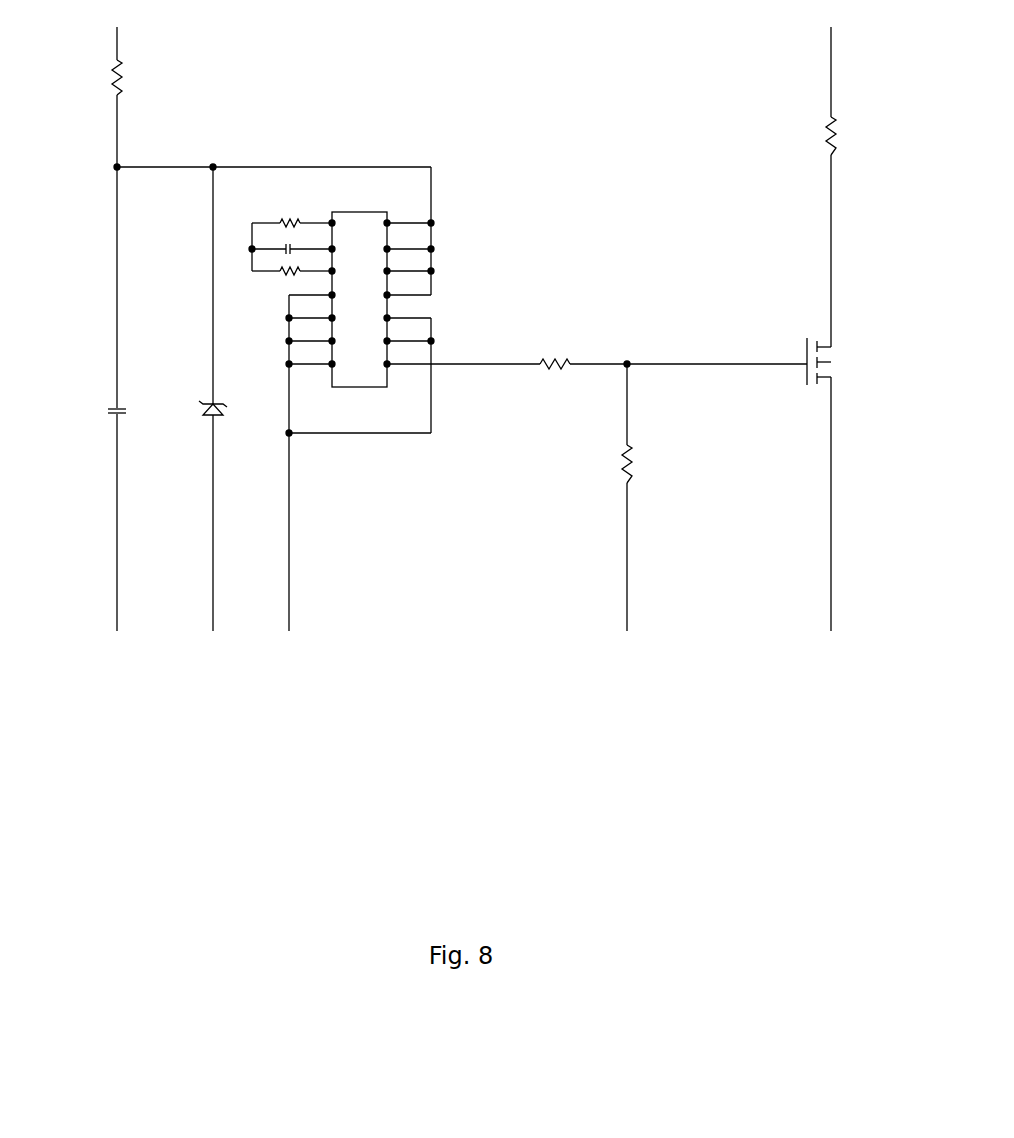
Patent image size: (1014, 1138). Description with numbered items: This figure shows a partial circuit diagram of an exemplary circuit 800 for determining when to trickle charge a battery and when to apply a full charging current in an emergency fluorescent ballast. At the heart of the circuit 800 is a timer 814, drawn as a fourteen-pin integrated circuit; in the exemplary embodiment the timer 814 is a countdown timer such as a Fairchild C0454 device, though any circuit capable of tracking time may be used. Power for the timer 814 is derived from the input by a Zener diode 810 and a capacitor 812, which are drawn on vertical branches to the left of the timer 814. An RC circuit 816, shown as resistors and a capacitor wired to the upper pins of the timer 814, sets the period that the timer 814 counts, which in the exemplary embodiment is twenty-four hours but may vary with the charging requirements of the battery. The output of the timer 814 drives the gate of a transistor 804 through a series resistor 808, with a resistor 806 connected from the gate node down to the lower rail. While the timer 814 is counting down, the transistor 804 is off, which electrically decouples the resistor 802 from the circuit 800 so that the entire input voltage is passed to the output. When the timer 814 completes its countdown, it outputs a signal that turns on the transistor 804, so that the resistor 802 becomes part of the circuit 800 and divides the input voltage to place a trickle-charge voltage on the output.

The circuit 800 is at (350, 660).
The resistor 802 is at (826, 137).
The transistor 804 is at (803, 348).
The gate pull-down resistor 806 is at (617, 465).
The gate resistor 808 is at (553, 370).
The Zener diode 810 is at (200, 412).
The capacitor 812 is at (108, 410).
The timer 814 is at (365, 215).
The RC circuit 816 is at (252, 249).